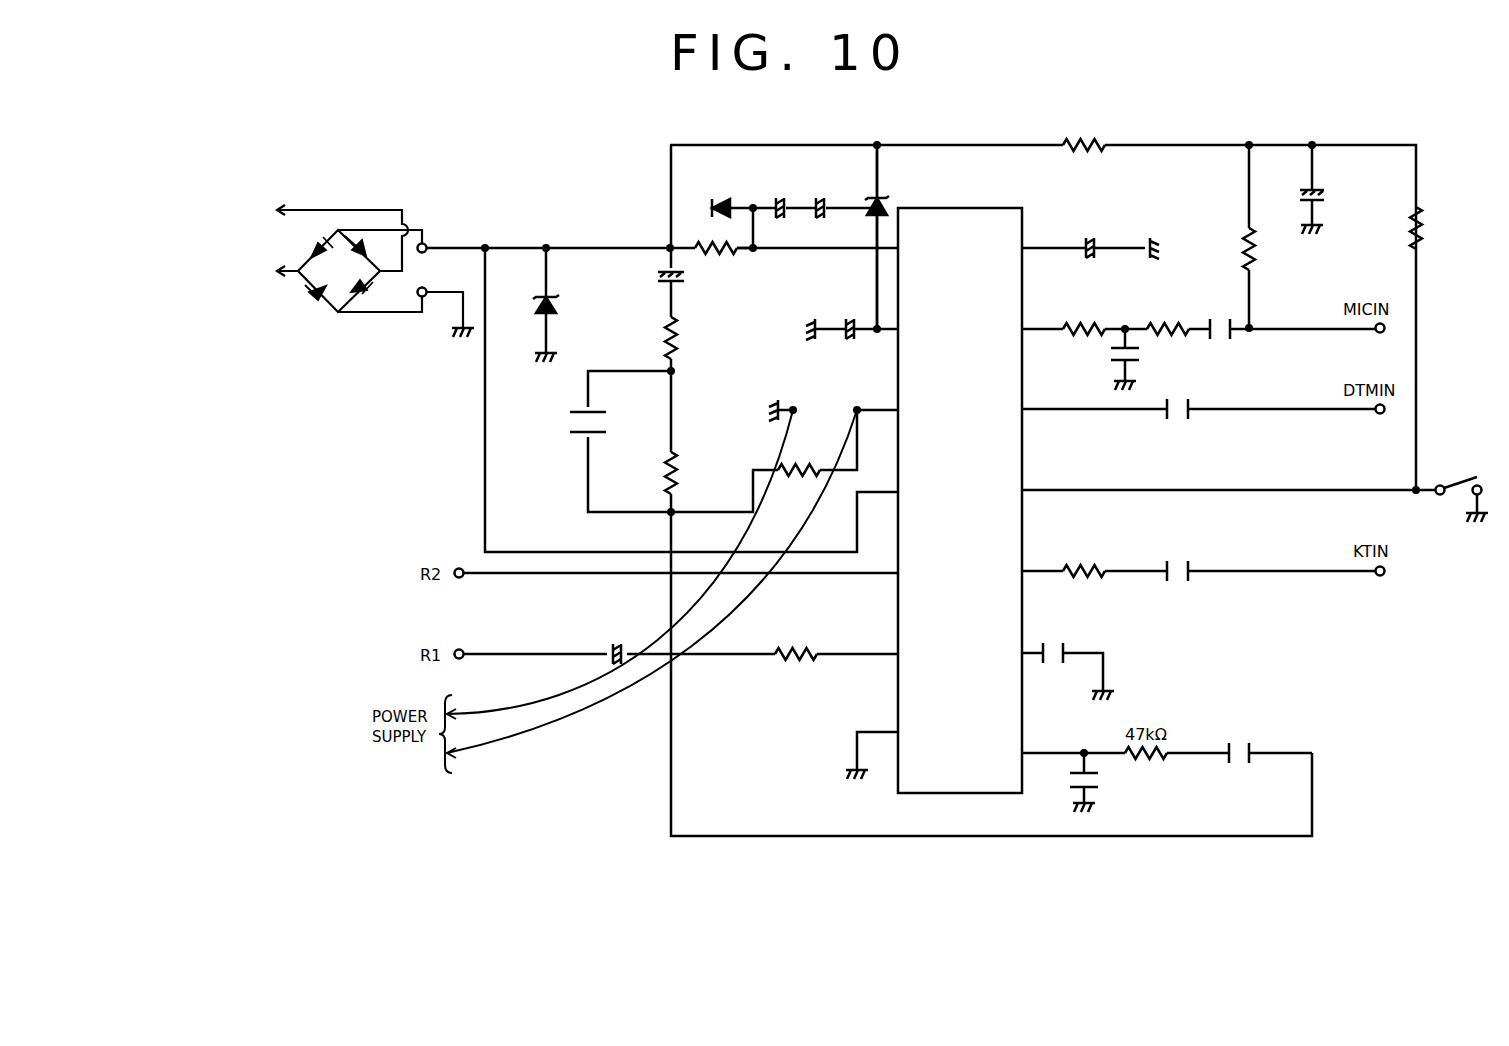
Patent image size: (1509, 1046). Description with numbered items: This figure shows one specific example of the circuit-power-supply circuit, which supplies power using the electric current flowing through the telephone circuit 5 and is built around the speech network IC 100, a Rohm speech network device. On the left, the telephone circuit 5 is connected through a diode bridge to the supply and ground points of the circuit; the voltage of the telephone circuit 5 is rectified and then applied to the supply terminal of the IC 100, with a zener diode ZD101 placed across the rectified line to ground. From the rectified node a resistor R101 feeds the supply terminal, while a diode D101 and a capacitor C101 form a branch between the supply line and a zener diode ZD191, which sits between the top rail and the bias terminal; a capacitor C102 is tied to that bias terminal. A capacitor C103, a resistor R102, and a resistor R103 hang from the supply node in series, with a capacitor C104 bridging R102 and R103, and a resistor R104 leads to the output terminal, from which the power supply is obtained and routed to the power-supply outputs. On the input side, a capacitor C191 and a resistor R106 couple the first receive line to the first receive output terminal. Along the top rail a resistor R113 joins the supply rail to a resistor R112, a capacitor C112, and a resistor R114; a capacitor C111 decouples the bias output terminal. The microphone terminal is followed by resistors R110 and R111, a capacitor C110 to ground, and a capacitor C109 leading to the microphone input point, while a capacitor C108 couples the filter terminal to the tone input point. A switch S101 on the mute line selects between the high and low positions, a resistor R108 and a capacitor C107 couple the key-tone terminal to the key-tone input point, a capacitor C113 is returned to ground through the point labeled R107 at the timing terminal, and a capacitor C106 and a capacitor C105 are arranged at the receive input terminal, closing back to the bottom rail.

The telephone circuit 5 is at (263, 290).
The telephone IC BA8216 100 is at (960, 485).
The zener diode 15V ZD101 is at (527, 305).
The resistor 1.5k ohm R101 is at (675, 227).
The diode 1SS133 D101 is at (720, 208).
The capacitor 22uF C101 is at (815, 204).
The zener diode 5.6V ZD191 is at (912, 237).
The capacitor 4.7uF C102 is at (836, 320).
The capacitor 4.7uF C103 is at (695, 280).
The resistor 1.8k ohm R102 is at (696, 340).
The capacitor 22nF C104 is at (604, 441).
The resistor 2.7k ohm R103 is at (696, 479).
The resistor 150 ohm R104 is at (764, 461).
The capacitor 4.7uF C191 is at (594, 654).
The resistor 680 ohm R106 is at (796, 654).
The resistor 2.7k ohm R113 is at (1091, 147).
The capacitor 10uF C111 is at (1108, 228).
The resistor 1.2k ohm R112 is at (1217, 236).
The capacitor 100uF C112 is at (1333, 189).
The resistor 33k ohm R114 is at (1442, 224).
The resistor 4.7 ohm R110 is at (1084, 309).
The resistor 4.7 ohm R111 is at (1168, 309).
The capacitor 10nF C110 is at (1101, 359).
The capacitor 33nF C109 is at (1241, 339).
The capacitor 100nF C108 is at (1173, 431).
The switch S101 is at (1431, 492).
The resistor 100k ohm R108 is at (1079, 550).
The capacitor 10nF C107 is at (1178, 573).
The capacitor 100nF C113 is at (1089, 658).
The resistor R107 is at (1128, 694).
The capacitor 1000pF C106 is at (1117, 782).
The capacitor 10nF C105 is at (1215, 744).